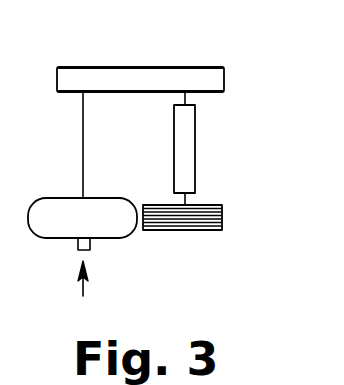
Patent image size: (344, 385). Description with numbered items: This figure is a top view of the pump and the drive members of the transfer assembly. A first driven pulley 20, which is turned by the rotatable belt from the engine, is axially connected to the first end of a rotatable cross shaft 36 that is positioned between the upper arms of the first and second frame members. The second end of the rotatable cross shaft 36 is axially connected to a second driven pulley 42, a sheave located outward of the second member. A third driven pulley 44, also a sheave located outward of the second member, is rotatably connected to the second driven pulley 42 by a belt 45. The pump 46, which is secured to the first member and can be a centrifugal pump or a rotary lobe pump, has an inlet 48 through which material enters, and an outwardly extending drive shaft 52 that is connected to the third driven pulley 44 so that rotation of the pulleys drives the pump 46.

The first driven pulley 20 is at (222, 221).
The rotatable cross shaft 36 is at (195, 147).
The second driven pulley 42 is at (224, 67).
The third driven pulley 44 is at (88, 67).
The belt 45 is at (131, 67).
The pump 46 is at (113, 238).
The inlet 48 is at (78, 243).
The drive shaft 52 is at (84, 149).